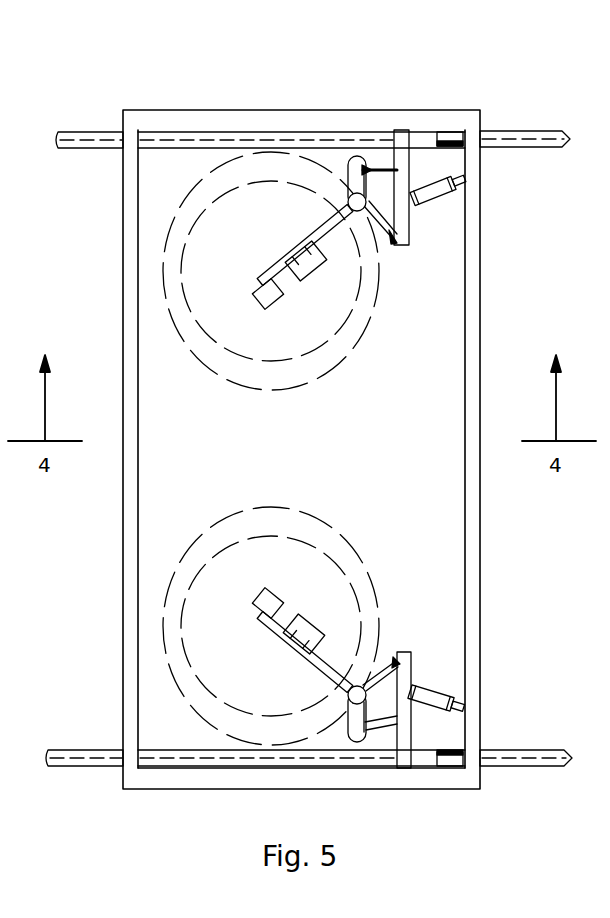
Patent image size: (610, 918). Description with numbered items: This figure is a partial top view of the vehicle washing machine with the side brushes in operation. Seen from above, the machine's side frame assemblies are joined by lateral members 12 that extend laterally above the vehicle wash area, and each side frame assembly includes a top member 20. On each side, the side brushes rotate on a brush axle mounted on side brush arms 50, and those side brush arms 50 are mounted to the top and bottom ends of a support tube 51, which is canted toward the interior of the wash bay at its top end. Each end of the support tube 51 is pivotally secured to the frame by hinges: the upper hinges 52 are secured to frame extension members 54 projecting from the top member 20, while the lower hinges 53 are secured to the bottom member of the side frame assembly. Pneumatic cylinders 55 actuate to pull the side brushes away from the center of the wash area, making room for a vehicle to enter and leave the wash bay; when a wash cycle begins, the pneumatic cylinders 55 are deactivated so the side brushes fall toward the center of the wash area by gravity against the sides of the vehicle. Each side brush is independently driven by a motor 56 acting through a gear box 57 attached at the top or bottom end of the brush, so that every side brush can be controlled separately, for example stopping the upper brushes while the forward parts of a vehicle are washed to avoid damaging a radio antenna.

The lateral members 12 is at (124, 527).
The top member 20 is at (433, 777).
The side brush arms 50 is at (340, 222).
The support tube 51 is at (353, 173).
The upper hinges 52 is at (381, 658).
The lower hinges 53 is at (400, 729).
The frame extension members 54 is at (391, 173).
The pneumatic cylinders 55 is at (444, 183).
The motor 56 is at (297, 262).
The gear boxes 57 is at (263, 280).